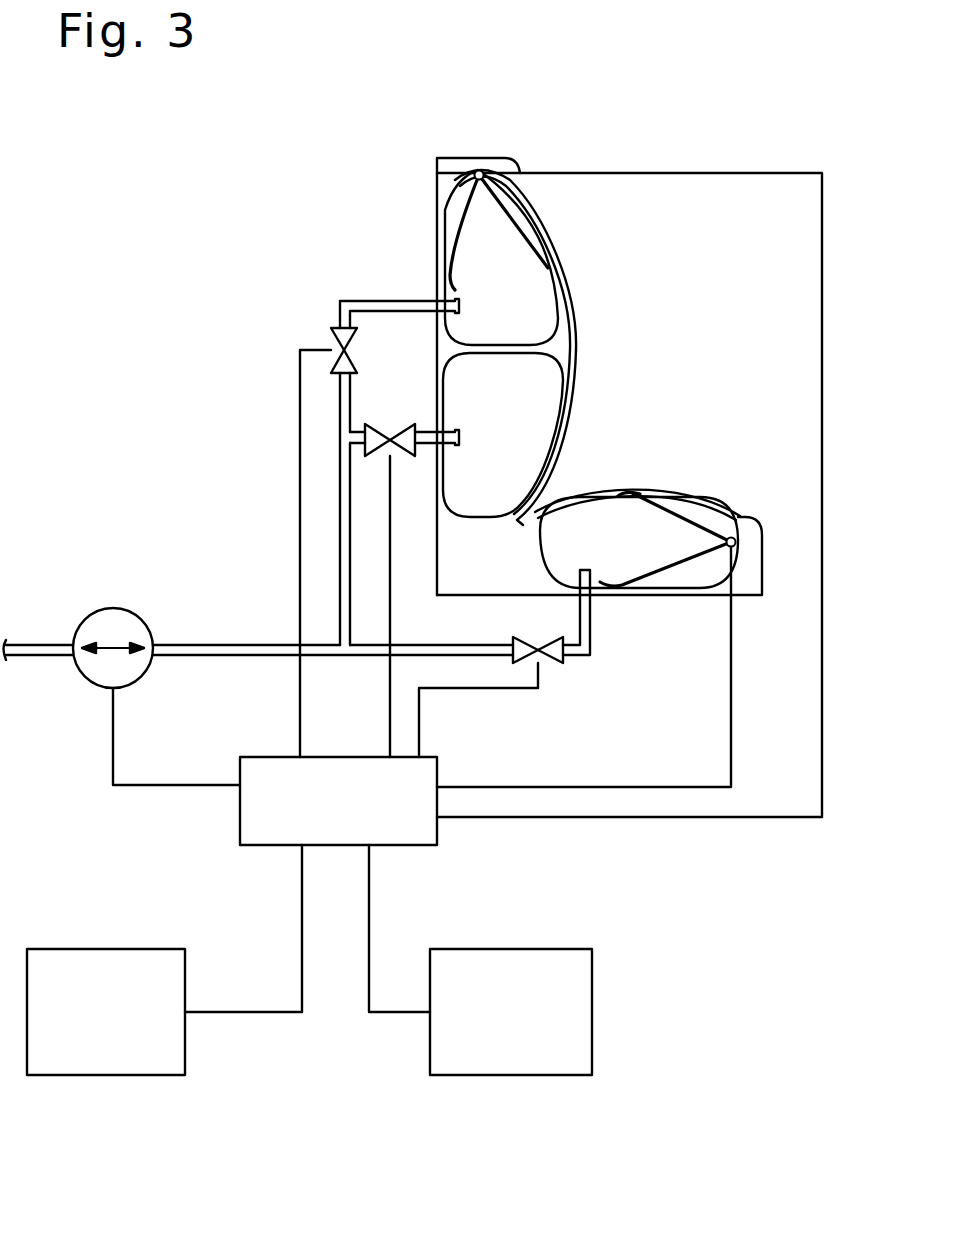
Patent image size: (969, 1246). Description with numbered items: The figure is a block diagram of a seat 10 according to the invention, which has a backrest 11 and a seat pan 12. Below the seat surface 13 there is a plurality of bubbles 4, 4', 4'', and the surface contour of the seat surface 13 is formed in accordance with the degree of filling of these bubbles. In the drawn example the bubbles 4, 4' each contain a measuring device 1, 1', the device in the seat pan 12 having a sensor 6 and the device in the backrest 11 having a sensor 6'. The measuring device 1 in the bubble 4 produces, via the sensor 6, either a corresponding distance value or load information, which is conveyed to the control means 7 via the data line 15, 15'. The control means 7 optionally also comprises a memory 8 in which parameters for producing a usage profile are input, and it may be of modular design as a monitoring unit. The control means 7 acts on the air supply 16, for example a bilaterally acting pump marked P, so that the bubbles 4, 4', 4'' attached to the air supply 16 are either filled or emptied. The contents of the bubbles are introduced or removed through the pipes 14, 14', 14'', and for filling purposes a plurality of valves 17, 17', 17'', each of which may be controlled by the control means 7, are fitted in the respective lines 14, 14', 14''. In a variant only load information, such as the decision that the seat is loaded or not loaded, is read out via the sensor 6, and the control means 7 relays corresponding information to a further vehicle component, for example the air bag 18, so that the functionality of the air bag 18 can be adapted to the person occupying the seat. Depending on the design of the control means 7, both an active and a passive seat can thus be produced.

The measuring device 1 is at (672, 497).
The measuring device 1' is at (528, 188).
The bubble 4 is at (639, 582).
The bubble 4' is at (463, 257).
The bubble 4'' is at (467, 430).
The sensor 6 is at (758, 493).
The sensor 6' is at (415, 164).
The control means 7 is at (245, 820).
The memory 8 is at (82, 965).
The seat 10 is at (560, 355).
The backrest 11 is at (557, 249).
The seat pan 12 is at (628, 487).
The seat surface 13 is at (572, 325).
The pipe 14 is at (591, 665).
The pipe 14' is at (381, 273).
The line 14'' is at (336, 453).
The data line 15 is at (584, 667).
The data line 15' is at (629, 442).
The air supply 16 is at (100, 610).
The valve 17 is at (491, 698).
The valve 17' is at (275, 521).
The valve 17'' is at (316, 563).
The air bag 18 is at (542, 965).
The pressure source P is at (85, 686).